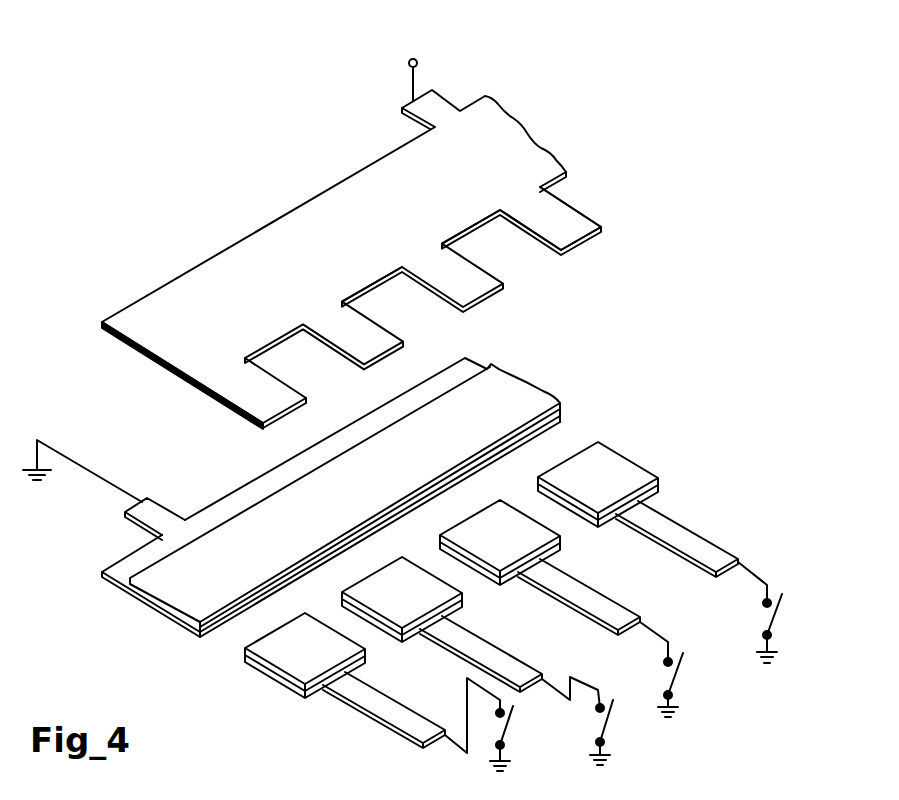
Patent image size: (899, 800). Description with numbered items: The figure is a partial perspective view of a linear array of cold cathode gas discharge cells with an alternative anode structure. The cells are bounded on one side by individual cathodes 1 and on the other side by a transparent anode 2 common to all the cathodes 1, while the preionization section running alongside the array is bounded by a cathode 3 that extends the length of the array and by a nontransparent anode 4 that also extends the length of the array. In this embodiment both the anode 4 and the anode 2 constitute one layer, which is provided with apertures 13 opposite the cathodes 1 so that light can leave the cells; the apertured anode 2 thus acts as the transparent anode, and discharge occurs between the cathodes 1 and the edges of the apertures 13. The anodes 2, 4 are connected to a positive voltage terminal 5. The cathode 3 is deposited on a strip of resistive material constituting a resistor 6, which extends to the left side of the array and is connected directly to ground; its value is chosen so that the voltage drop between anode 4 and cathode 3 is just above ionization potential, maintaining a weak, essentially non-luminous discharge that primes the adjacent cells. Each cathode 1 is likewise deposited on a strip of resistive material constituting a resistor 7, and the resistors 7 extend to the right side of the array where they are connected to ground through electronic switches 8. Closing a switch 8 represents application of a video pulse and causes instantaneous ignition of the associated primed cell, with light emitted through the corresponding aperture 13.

The cathodes 1 is at (357, 647).
The anode 2 is at (598, 218).
The cathode 3 is at (183, 600).
The nontransparent anode 4 is at (186, 279).
The positive voltage terminal 5 is at (418, 63).
The resistor 6 is at (155, 515).
The resistors 7 is at (397, 703).
The electronic switches 8 is at (513, 732).
The apertures 13 is at (437, 317).